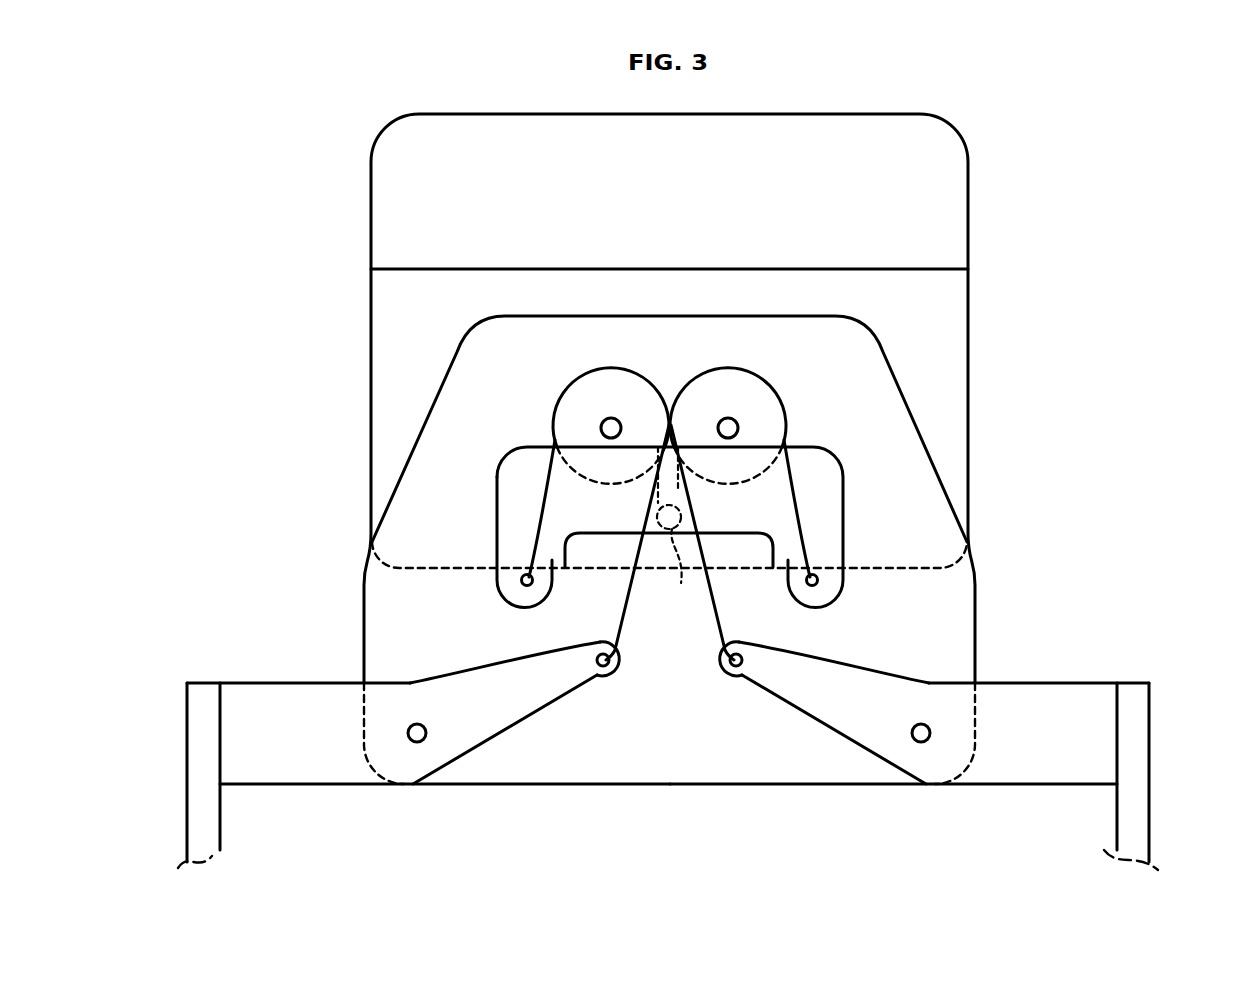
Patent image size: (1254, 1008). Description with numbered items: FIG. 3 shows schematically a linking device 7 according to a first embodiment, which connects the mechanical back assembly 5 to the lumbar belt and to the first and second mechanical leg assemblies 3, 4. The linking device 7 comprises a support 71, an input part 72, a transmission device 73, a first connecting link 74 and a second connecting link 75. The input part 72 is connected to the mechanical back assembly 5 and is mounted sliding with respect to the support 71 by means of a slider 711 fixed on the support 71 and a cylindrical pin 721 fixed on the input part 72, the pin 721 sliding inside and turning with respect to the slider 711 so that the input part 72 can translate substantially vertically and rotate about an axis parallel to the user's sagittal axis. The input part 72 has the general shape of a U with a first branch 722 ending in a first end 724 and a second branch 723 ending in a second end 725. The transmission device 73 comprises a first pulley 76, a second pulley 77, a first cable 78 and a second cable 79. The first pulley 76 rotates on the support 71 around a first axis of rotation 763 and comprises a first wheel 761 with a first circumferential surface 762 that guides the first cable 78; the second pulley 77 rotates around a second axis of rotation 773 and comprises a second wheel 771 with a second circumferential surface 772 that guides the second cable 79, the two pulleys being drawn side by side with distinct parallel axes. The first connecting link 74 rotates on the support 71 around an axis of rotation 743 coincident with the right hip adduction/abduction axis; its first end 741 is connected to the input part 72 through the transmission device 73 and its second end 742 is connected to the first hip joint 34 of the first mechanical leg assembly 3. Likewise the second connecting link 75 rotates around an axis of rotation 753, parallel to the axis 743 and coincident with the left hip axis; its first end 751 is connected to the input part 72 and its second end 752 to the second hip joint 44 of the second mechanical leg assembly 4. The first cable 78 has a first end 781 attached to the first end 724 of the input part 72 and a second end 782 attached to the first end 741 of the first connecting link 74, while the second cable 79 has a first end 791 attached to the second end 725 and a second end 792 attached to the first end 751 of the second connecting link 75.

The first mechanical leg assembly 3 is at (1132, 790).
The second mechanical leg assembly 4 is at (206, 790).
The mechanical back assembly 5 is at (975, 240).
The linking device 7 is at (203, 290).
The first hip joint 34 is at (1153, 738).
The second hip joint 44 is at (183, 738).
The support 71 is at (960, 631).
The input part 72 is at (818, 510).
The transmission device 73 is at (878, 468).
The first connecting link 74 is at (850, 720).
The second connecting link 75 is at (489, 720).
The first pulley 76 is at (770, 376).
The second pulley 77 is at (576, 376).
The first cable 78 is at (722, 628).
The second cable 79 is at (618, 628).
The slider 711 is at (665, 497).
The cylindrical pin 721 is at (669, 570).
The first branch 722 is at (787, 558).
The second branch 723 is at (553, 558).
The first end 724 is at (815, 609).
The second end 725 is at (524, 609).
The first end 741 is at (750, 692).
The second end 742 is at (1108, 690).
The axis of rotation 743 is at (920, 744).
The first end 751 is at (590, 692).
The second end 752 is at (232, 690).
The axis of rotation 753 is at (420, 744).
The first wheel 761 is at (760, 400).
The first circumferential surface 762 is at (729, 371).
The first axis of rotation 763 is at (737, 430).
The second wheel 771 is at (578, 400).
The second circumferential surface 772 is at (611, 371).
The second axis of rotation 773 is at (601, 430).
The first end 781 is at (818, 581).
The second end 782 is at (733, 671).
The first end 791 is at (521, 581).
The second end 792 is at (606, 671).